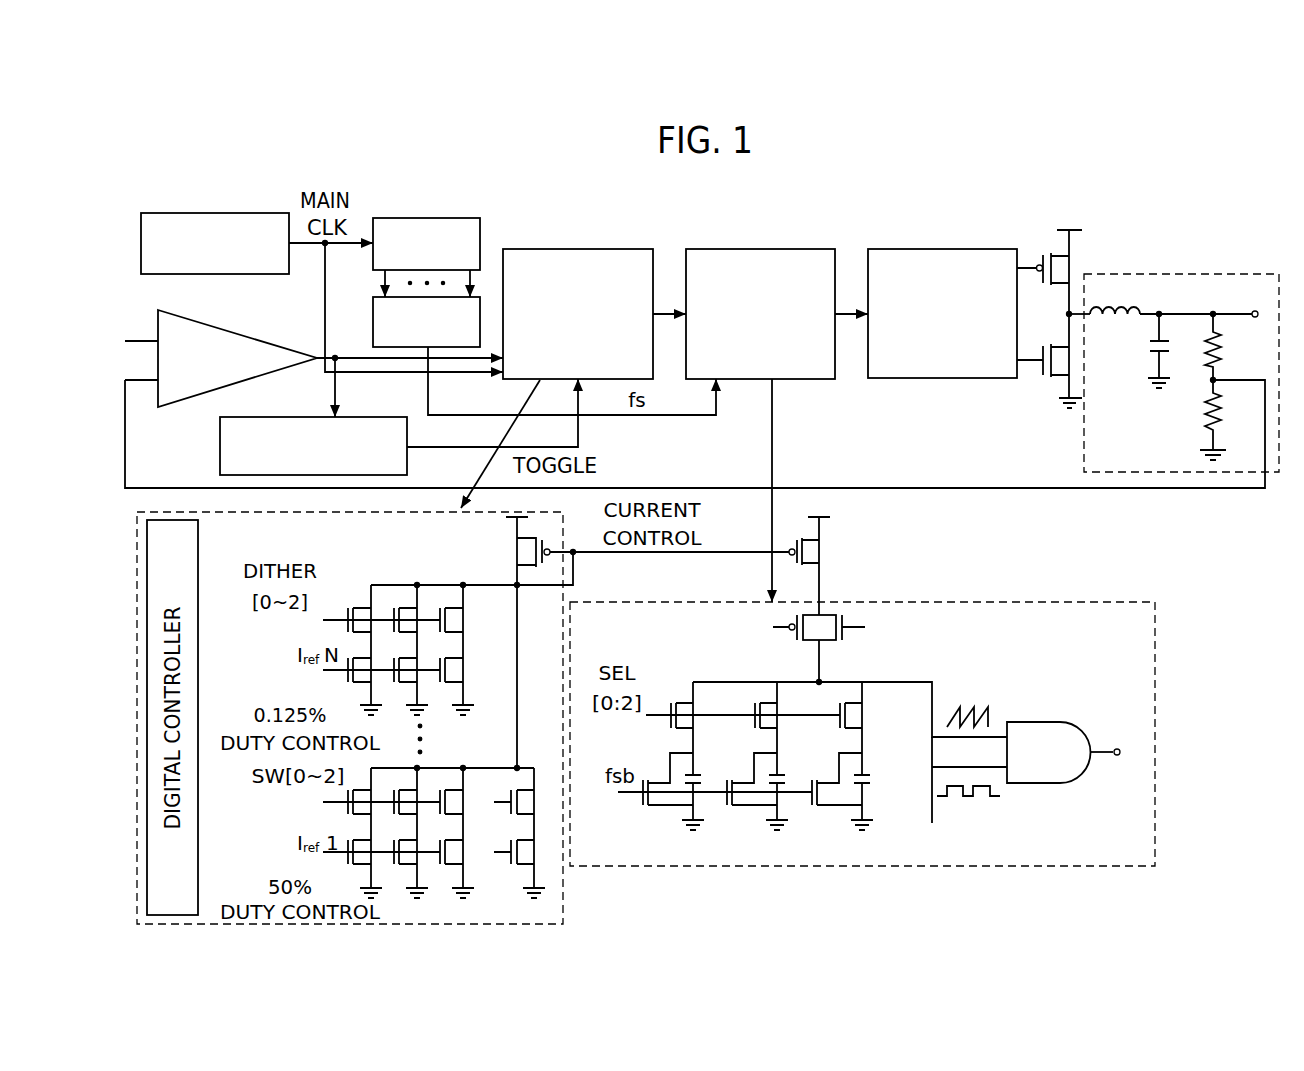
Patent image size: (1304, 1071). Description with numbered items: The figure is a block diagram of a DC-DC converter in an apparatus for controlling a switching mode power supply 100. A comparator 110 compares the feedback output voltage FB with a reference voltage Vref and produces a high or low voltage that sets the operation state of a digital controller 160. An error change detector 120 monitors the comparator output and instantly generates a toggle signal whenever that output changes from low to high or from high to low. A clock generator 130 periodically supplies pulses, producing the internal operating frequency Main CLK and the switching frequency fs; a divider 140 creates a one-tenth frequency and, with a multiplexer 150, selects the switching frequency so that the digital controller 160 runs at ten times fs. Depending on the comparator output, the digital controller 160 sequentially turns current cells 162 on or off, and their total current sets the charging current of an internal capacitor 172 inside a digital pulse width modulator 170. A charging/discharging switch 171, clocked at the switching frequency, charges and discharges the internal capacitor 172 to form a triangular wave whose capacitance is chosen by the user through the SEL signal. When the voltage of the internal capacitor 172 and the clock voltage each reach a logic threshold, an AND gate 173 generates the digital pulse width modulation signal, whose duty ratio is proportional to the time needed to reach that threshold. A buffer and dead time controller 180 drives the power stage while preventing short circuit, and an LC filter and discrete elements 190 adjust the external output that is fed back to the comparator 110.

The apparatus for controlling a switching mode power supply 100 is at (1155, 224).
The comparator 110 is at (252, 335).
The error change detector 120 is at (220, 447).
The clock generator 130 is at (215, 213).
The divider 140 is at (428, 218).
The multiplexer (MUX) 150 is at (373, 337).
The digital controller 160 is at (578, 249).
The current cells 162 is at (441, 584).
The digital pulse width modulator (DPWM) 170 is at (760, 249).
The charging/discharging switch 171 is at (830, 613).
The internal capacitor 172 is at (853, 715).
The AND gate 173 is at (1033, 722).
The buffer and dead time controller 180 is at (937, 249).
The LC filter and discrete elements 190 is at (1250, 274).